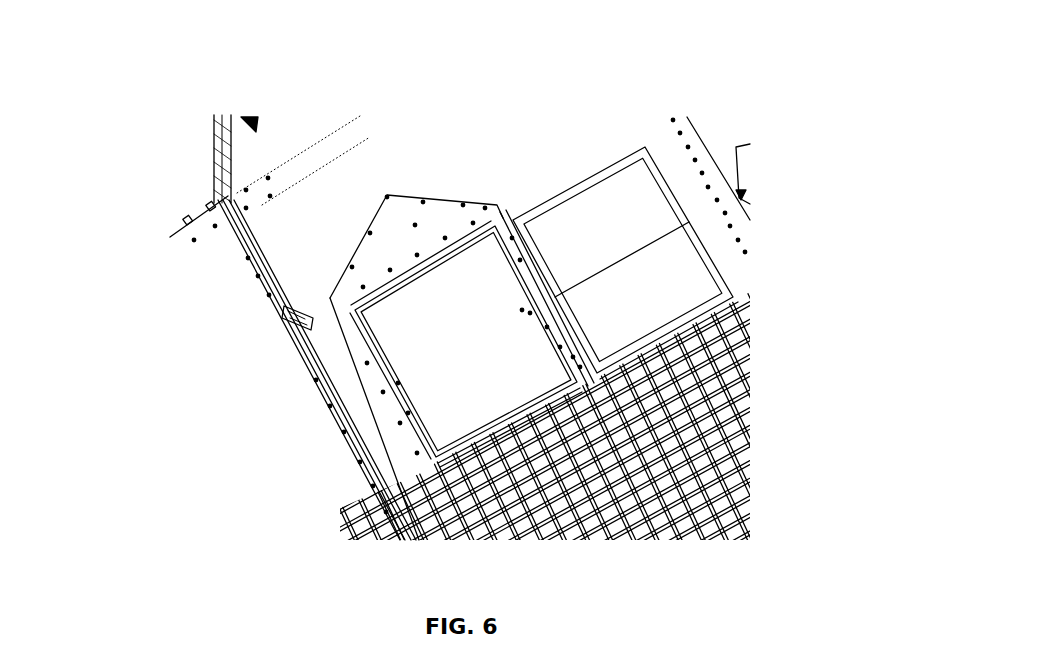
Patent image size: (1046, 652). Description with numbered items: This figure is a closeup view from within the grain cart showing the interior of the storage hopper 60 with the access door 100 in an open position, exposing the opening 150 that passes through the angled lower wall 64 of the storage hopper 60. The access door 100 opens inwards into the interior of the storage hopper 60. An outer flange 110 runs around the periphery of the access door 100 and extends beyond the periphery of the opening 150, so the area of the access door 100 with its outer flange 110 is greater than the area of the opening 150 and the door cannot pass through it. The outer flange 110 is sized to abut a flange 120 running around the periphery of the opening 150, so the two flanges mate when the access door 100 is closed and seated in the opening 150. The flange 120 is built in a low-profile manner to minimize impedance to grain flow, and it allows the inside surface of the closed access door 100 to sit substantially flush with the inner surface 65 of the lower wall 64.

The storage hopper 60 is at (192, 172).
The lower wall 64 is at (367, 170).
The inner surface 65 is at (373, 255).
The access door 100 is at (678, 290).
The outer flange 110 is at (650, 143).
The flange 120 is at (355, 317).
The opening 150 is at (494, 297).